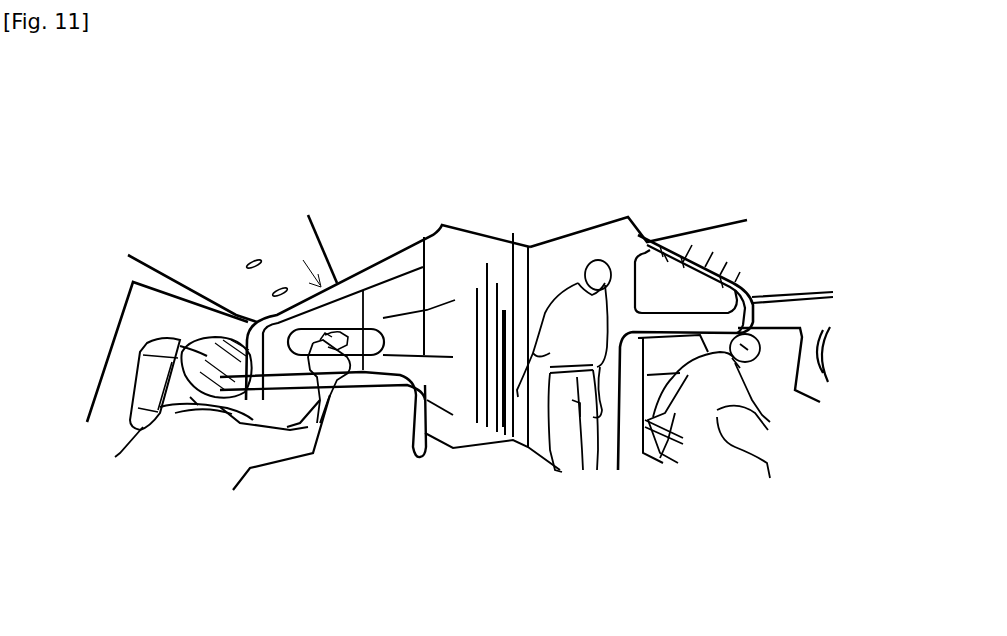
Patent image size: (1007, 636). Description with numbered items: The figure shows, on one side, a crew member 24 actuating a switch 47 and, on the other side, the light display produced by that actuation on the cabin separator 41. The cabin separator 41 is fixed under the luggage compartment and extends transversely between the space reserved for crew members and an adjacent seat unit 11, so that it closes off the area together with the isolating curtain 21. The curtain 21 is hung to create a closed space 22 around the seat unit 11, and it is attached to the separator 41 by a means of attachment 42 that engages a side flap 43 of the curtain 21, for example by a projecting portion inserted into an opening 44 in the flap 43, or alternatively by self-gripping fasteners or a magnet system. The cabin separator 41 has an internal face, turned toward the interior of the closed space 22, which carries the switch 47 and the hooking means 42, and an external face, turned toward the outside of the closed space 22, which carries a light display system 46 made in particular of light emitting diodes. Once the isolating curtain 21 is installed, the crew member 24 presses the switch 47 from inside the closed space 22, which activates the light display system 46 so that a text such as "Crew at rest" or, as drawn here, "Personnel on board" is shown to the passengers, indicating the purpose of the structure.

The seat unit 11 is at (773, 333).
The isolating curtain 21 is at (450, 256).
The closed space 22 is at (195, 318).
The crew member 24 is at (163, 430).
The cabin separator 41 is at (300, 329).
The means of attachment 42 is at (307, 312).
The side flap 43 is at (394, 300).
The opening 44 is at (350, 327).
The light display system 46 is at (720, 250).
The switch 47 is at (348, 352).